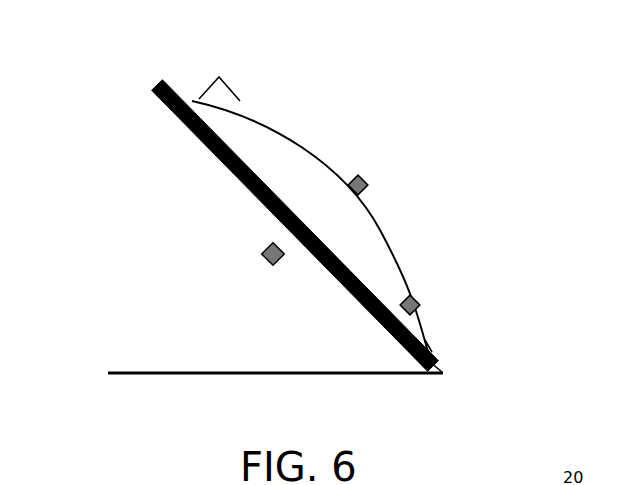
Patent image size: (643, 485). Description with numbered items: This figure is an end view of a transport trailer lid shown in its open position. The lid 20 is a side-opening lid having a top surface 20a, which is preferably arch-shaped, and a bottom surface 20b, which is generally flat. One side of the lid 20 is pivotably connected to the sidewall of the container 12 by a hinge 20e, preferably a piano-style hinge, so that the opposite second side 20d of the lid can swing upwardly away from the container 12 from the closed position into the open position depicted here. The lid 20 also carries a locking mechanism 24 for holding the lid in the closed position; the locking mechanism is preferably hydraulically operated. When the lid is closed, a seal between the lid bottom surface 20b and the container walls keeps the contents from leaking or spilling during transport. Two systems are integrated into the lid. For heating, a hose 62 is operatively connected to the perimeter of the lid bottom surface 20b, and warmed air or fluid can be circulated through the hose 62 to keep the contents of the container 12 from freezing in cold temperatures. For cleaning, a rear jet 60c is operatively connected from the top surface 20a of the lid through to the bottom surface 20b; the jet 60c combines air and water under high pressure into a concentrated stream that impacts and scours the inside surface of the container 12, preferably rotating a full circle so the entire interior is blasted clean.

The container 12 is at (135, 371).
The lid 20 is at (462, 84).
The top surface 20a is at (192, 101).
The bottom surface 20b is at (380, 228).
The second side 20d is at (428, 341).
The hinge 20e is at (440, 370).
The locking mechanism 24 is at (230, 88).
The rear jet 60c is at (372, 188).
The hose 62 is at (403, 337).